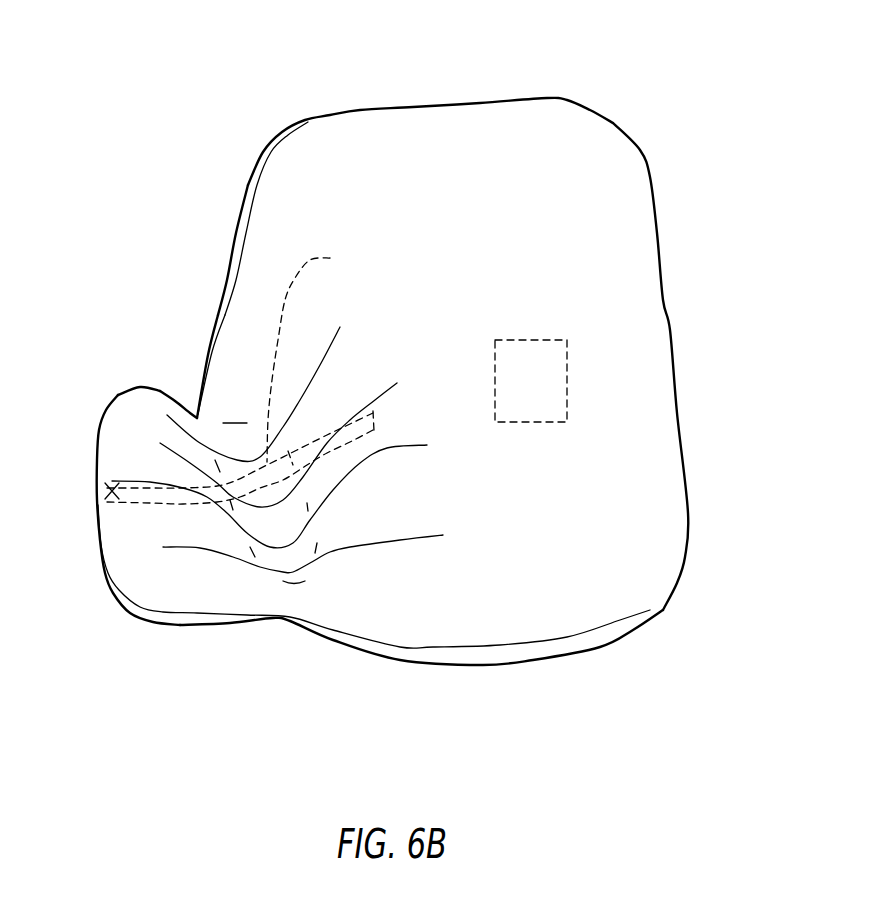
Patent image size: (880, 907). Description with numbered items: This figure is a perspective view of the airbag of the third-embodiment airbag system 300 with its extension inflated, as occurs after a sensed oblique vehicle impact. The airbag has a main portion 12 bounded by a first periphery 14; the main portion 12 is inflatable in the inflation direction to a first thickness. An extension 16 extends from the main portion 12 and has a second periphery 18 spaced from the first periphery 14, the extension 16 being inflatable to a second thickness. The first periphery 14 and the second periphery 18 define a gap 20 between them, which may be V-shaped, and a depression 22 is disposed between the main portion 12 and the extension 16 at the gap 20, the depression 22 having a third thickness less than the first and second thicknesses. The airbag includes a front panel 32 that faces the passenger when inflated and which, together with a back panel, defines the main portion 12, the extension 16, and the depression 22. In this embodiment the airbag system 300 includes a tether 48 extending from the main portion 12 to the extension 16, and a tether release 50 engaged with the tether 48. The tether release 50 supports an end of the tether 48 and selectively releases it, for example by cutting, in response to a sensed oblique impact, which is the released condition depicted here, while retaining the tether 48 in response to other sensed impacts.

The airbag system 300 is at (668, 62).
The main portion 12 is at (480, 230).
The first periphery 14 is at (330, 115).
The extension 16 is at (127, 433).
The second periphery 18 is at (135, 386).
The gap 20 is at (188, 380).
The depression 22 is at (270, 527).
The front panel 32 is at (637, 237).
The tether 48 is at (311, 352).
The tether release 50 is at (567, 357).